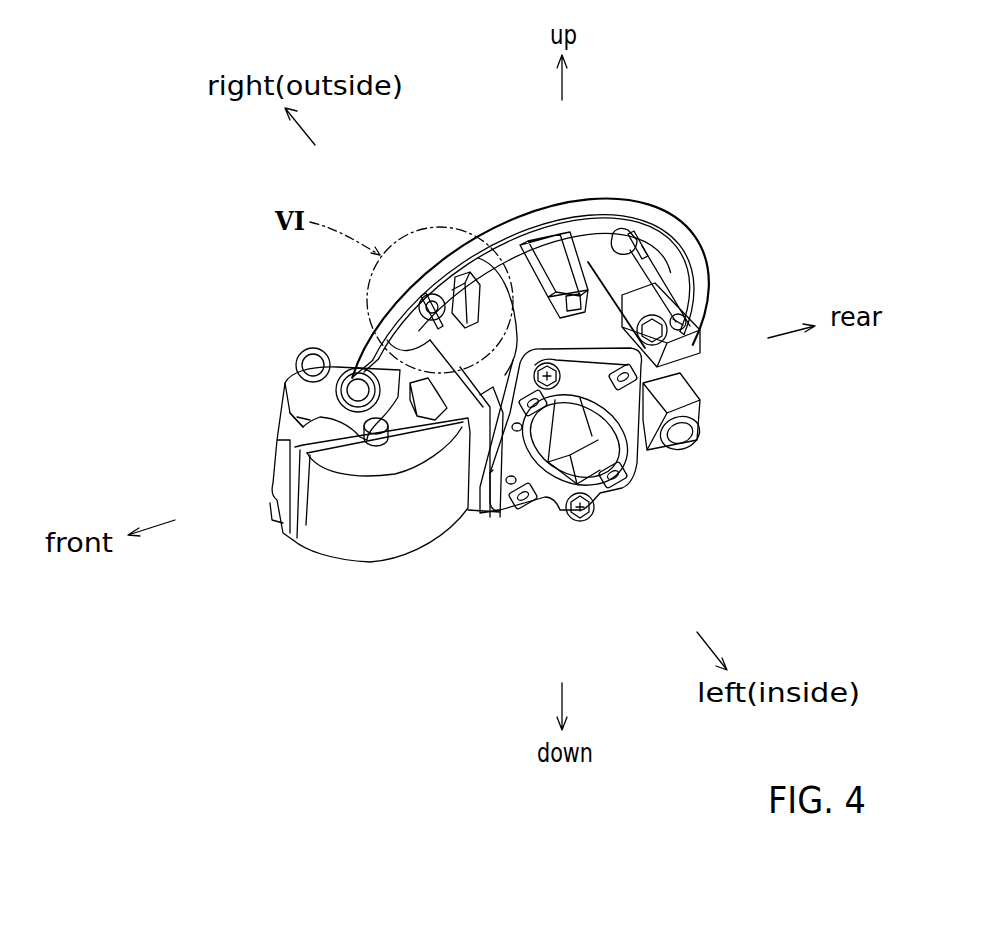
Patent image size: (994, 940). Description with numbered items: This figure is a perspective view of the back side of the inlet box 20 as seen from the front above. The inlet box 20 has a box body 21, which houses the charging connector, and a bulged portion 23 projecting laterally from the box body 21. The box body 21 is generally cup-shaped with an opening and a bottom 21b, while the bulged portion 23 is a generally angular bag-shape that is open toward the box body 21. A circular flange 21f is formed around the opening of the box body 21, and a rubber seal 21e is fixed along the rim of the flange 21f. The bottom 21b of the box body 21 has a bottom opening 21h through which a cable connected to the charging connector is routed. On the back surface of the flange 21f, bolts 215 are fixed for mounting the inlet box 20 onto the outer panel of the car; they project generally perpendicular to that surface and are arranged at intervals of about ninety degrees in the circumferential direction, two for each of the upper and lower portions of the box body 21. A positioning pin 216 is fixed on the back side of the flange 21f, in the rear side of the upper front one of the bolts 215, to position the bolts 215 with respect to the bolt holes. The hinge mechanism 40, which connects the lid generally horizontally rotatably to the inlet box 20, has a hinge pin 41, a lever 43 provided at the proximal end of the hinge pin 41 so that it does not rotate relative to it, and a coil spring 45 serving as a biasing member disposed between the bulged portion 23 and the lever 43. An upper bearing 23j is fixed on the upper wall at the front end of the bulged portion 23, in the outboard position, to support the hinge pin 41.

The inlet box 20 is at (446, 593).
The box body 21 is at (551, 526).
The bottom 21b is at (490, 518).
The seal 21e is at (527, 218).
The flange 21f is at (593, 242).
The bottom opening 21h is at (605, 450).
The bolts 215 is at (405, 317).
The positioning pin 216 is at (465, 252).
The bulged portion 23 is at (396, 535).
The upper bearing 23j is at (290, 377).
The hinge mechanism 40 is at (315, 387).
The hinge pin 41 is at (290, 347).
The lever 43 is at (290, 411).
The coil spring 45 is at (353, 370).